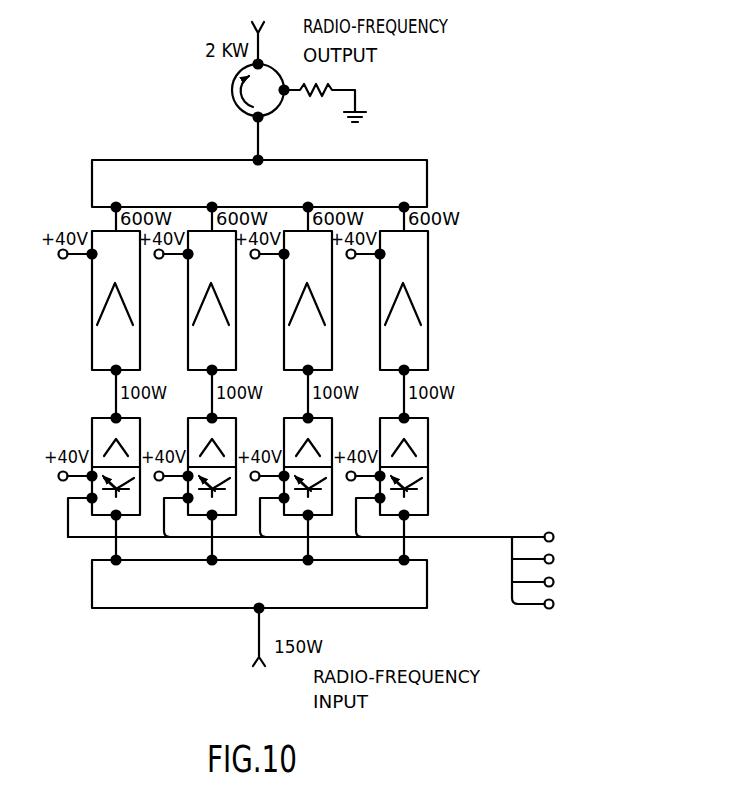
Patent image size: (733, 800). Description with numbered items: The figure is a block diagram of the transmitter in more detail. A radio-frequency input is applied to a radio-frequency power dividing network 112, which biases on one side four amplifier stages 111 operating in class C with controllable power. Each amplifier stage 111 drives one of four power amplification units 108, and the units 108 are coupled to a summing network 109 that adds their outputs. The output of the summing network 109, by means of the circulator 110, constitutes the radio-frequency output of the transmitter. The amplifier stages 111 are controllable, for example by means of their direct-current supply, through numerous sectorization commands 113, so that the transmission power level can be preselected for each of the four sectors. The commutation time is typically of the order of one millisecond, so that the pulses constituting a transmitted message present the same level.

The power amplification unit 108 is at (83, 326).
The summing network 109 is at (107, 161).
The circulator 110 is at (232, 88).
The amplifier stage 111 is at (80, 440).
The radio-frequency power dividing network 112 is at (102, 600).
The commands 113 is at (539, 517).